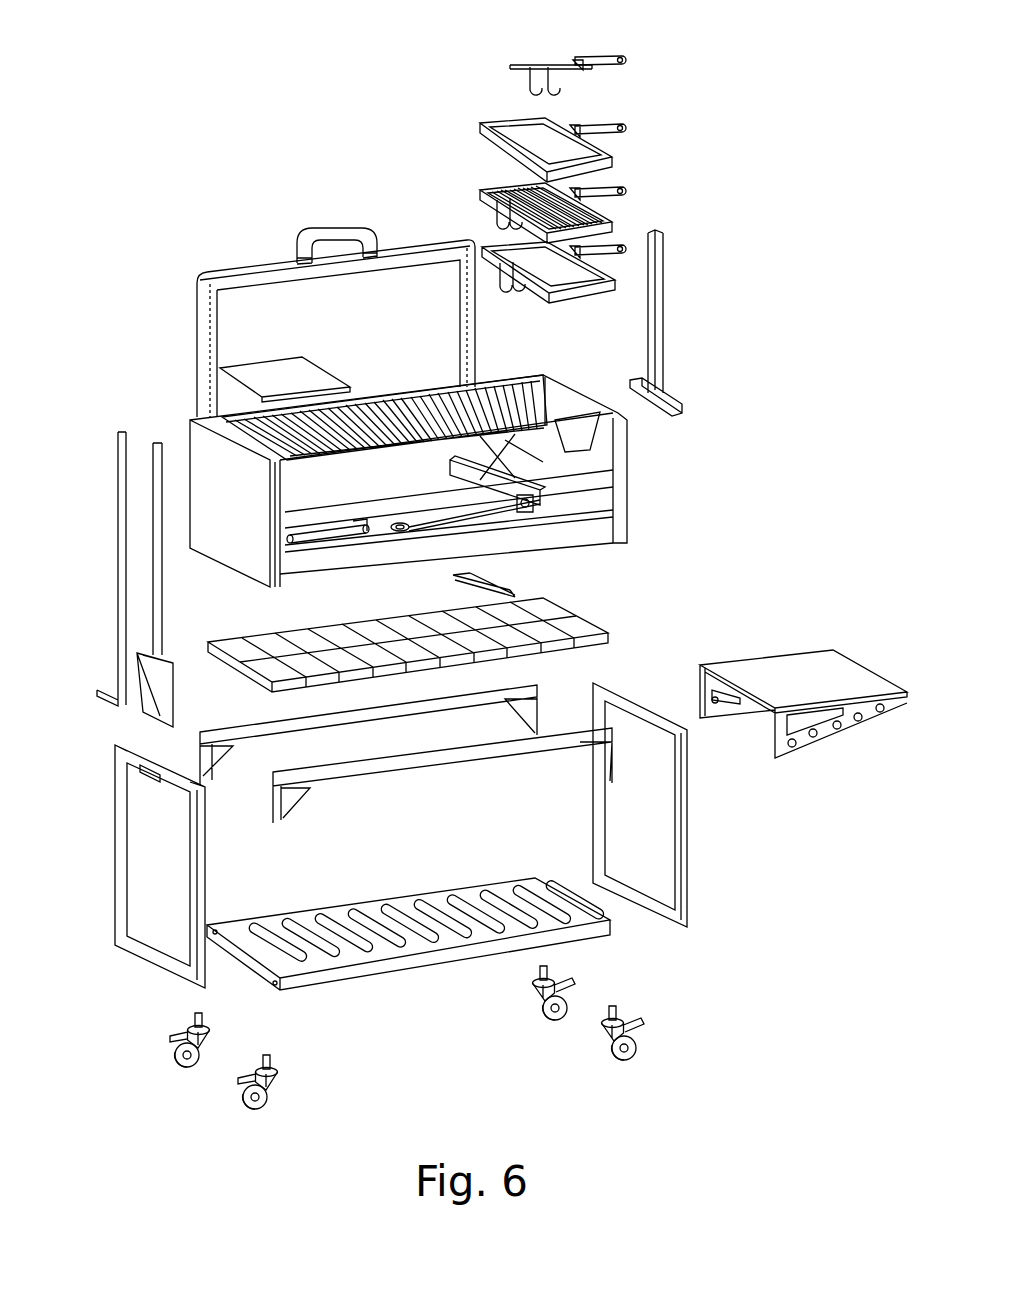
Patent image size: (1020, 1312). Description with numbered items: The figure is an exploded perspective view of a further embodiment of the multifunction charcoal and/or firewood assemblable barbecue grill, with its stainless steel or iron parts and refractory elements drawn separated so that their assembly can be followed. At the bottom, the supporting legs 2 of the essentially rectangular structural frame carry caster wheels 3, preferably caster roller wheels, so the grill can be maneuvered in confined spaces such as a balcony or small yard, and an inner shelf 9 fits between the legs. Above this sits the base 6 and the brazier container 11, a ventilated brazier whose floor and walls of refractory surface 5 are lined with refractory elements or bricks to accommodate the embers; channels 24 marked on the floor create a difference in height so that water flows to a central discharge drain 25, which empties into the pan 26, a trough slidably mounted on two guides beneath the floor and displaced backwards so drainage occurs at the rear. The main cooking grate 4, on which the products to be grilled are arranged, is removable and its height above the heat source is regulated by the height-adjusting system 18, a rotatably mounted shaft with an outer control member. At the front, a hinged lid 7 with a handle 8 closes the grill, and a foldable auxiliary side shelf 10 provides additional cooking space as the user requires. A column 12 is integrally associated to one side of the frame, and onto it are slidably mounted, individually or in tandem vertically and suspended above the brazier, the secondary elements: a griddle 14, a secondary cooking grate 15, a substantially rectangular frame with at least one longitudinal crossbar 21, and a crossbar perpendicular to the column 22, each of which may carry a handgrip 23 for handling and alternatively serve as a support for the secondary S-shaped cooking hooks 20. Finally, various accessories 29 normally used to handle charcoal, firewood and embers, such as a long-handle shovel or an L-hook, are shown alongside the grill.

The supporting legs 2 is at (678, 840).
The caster wheels 3 is at (643, 1035).
The main cooking grate 4 is at (477, 403).
The floor and walls of refractory surface 5 is at (588, 497).
The base 6 is at (510, 520).
The lid 7 is at (226, 275).
The handle 8 is at (330, 227).
The inner shelf 9 is at (383, 943).
The auxiliary side shelf 10 is at (832, 672).
The brazier container 11 is at (592, 458).
The column 12 is at (658, 318).
The griddle 14 is at (557, 270).
The secondary cooking grate 15 is at (563, 187).
The height-adjusting system 18 is at (317, 533).
The secondary S-shaped cooking hooks 20 is at (527, 80).
The substantially rectangular frame with at least one longitudinal crossbar 21 is at (607, 160).
The crossbar perpendicular to the column 22 is at (562, 64).
The handgrip 23 is at (604, 60).
The channel 24 is at (428, 527).
The central discharge drain 25 is at (398, 532).
The pan 26 is at (490, 580).
The various accessories 29 is at (265, 375).